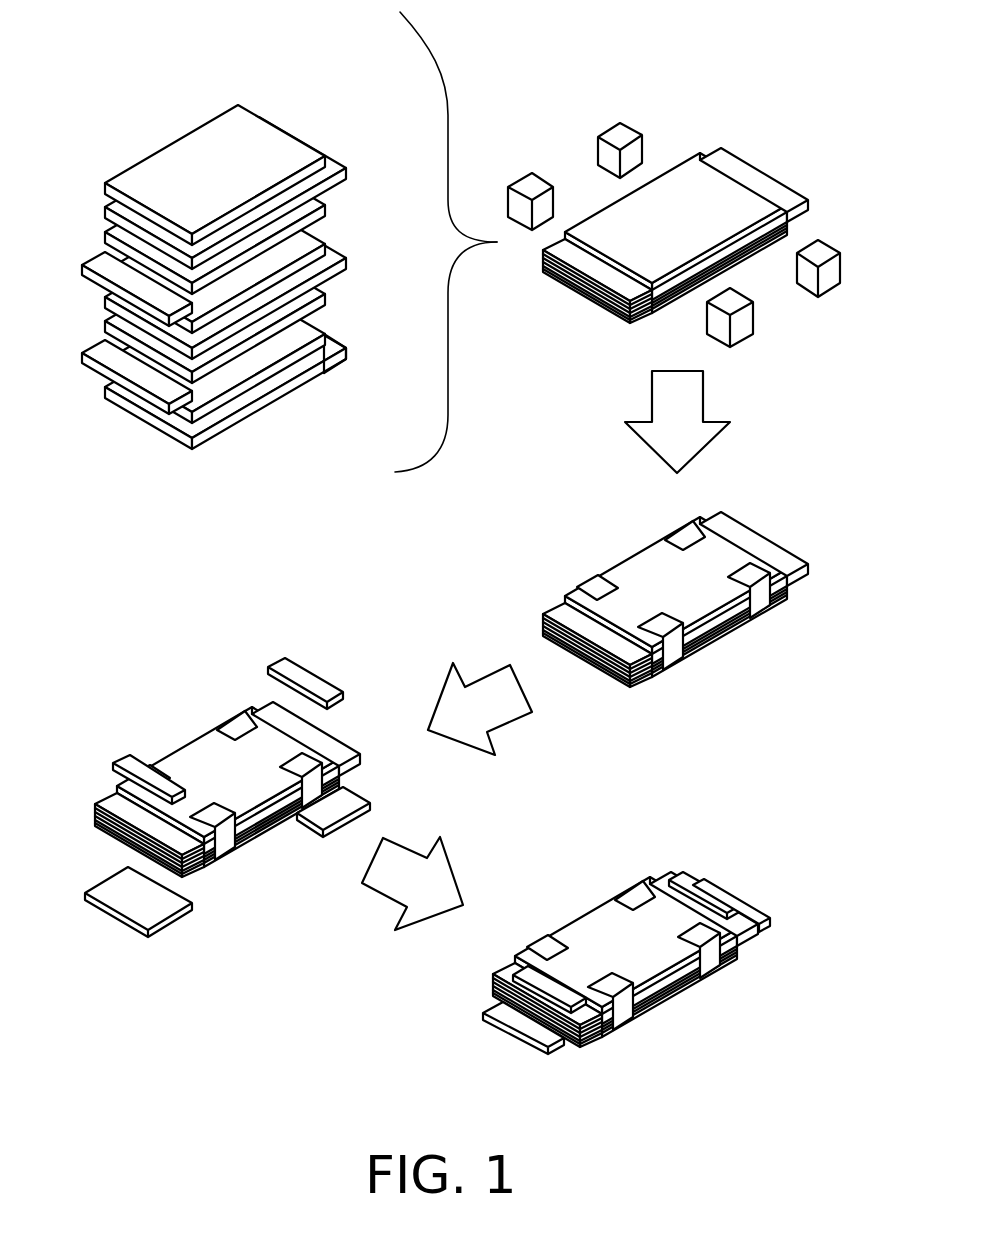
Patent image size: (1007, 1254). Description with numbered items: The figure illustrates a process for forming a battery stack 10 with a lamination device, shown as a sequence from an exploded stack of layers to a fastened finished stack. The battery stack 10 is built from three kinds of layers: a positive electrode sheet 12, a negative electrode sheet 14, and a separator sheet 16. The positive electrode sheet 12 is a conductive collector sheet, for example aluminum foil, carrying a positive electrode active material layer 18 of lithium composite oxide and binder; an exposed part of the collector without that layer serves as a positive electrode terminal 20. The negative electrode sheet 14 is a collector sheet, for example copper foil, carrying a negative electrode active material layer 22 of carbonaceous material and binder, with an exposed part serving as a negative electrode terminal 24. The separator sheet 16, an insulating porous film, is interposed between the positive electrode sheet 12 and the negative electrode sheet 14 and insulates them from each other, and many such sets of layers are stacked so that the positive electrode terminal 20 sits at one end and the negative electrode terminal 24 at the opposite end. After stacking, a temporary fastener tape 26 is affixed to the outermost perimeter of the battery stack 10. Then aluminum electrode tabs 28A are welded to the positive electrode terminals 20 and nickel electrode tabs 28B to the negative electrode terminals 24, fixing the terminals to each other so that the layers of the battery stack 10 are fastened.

The battery stack 10 is at (78, 112).
The positive electrode sheet 12 is at (337, 558).
The negative electrode sheet 14 is at (250, 404).
The separator sheet 16 is at (316, 352).
The positive electrode active material layer 18 is at (188, 384).
The positive electrode terminal 20 is at (115, 362).
The negative electrode active material layer 22 is at (313, 380).
The negative electrode terminal 24 is at (337, 378).
The temporary fastener tape 26 is at (616, 130).
The electrode tab for positive electrode terminals 28A is at (128, 765).
The electrode tab for negative electrode terminals 28B is at (282, 664).